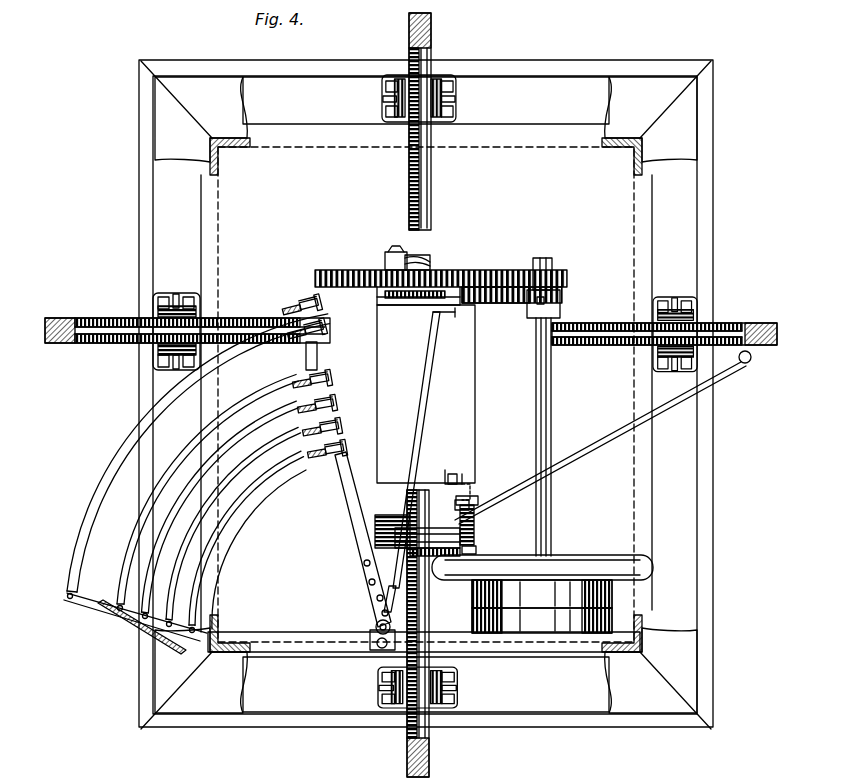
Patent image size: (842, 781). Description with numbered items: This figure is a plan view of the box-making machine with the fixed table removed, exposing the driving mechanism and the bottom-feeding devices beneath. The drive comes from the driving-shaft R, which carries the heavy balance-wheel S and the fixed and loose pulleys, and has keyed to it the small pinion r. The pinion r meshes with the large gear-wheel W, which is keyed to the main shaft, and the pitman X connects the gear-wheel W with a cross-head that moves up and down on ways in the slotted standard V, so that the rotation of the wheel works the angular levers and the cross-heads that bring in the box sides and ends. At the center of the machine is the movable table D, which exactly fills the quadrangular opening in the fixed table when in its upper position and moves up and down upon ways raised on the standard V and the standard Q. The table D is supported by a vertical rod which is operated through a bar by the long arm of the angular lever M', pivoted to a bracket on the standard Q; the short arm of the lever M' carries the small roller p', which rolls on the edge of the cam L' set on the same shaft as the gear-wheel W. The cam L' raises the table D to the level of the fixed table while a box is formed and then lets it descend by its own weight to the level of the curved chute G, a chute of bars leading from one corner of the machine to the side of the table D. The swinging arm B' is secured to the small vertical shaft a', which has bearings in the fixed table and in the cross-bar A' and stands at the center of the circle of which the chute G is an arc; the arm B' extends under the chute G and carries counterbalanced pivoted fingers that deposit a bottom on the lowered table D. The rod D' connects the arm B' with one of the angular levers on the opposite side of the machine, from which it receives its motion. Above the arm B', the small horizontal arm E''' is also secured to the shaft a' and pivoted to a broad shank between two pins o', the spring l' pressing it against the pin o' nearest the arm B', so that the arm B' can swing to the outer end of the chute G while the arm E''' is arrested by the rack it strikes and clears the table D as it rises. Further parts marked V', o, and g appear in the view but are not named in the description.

The cross-bar A' is at (424, 631).
The large gear-wheel W is at (441, 276).
The pitman X is at (408, 258).
The pinion r is at (560, 275).
The driving-shaft R is at (551, 437).
The slotted standard V is at (418, 306).
The slide bracket V' is at (496, 306).
The table D is at (426, 394).
The small horizontal arm E''' is at (420, 450).
The standard Q is at (468, 490).
The rod D' is at (603, 437).
The balance-wheel S is at (542, 556).
The cam L' is at (417, 526).
The angular lever M' is at (482, 520).
The roller p' is at (480, 546).
The swinging arm B' is at (358, 539).
The pin o' is at (366, 574).
The spring l' is at (392, 588).
The pin o is at (391, 596).
The pin g is at (393, 612).
The small vertical shaft a' is at (373, 631).
The curved chute G is at (197, 484).